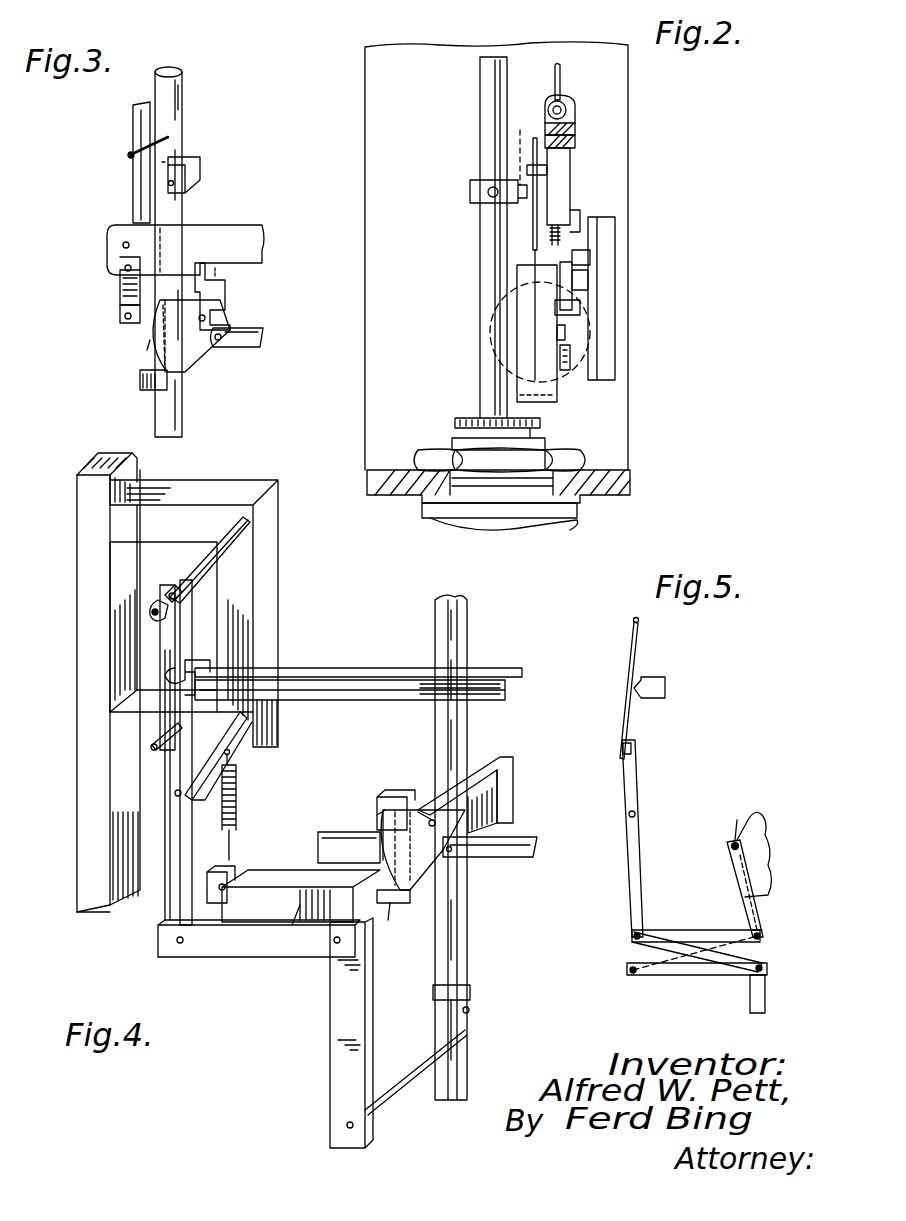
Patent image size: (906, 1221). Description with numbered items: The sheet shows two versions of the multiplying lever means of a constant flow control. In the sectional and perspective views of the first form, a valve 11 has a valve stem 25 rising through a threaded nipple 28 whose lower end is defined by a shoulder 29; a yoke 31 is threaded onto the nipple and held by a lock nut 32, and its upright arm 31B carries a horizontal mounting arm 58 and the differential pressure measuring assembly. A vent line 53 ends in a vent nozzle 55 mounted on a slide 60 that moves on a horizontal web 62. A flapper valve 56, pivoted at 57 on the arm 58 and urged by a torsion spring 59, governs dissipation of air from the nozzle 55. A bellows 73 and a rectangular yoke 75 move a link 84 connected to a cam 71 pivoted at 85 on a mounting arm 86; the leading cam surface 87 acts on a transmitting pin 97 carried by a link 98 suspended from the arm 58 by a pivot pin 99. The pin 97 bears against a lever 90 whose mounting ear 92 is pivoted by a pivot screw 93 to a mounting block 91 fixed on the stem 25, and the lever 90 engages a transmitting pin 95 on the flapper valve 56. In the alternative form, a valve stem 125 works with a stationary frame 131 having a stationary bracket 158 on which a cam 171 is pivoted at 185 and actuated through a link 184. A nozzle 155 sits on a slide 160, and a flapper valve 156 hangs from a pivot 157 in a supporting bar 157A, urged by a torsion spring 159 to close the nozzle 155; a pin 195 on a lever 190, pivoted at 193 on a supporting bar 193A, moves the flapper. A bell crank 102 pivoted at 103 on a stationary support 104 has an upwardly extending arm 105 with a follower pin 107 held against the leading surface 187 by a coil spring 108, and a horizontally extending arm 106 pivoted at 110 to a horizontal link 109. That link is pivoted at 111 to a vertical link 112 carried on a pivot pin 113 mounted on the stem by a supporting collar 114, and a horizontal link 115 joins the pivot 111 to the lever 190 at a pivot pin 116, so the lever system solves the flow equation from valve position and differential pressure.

In FIG. 2, the valve 11 is at (577, 515).
In FIG. 3, the valve stem 25 is at (182, 80).
In FIG. 2, the valve stem 25 is at (480, 100).
In FIG. 2, the threaded nipple 28 is at (455, 440).
In FIG. 2, the shoulder 29 is at (560, 455).
In FIG. 2, the yoke 31 is at (630, 480).
In FIG. 2, the upright arm of yoke 31B is at (365, 160).
In FIG. 2, the lock nut 32 is at (430, 458).
In FIG. 2, the vent line 53 is at (562, 73).
In FIG. 2, the vent nozzle 55 is at (575, 100).
In FIG. 3, the flapper valve 56 is at (150, 128).
In FIG. 2, the flapper valve 56 is at (570, 180).
In FIG. 3, the pivot 57 is at (123, 246).
In FIG. 2, the pivot 57 is at (578, 220).
In FIG. 3, the horizontal mounting arm 58 is at (230, 240).
In FIG. 2, the horizontal mounting arm 58 is at (615, 230).
In FIG. 2, the torsion spring 59 is at (560, 235).
In FIG. 2, the slide 60 is at (575, 128).
In FIG. 2, the horizontal web 62 is at (575, 143).
In FIG. 3, the cam 71 is at (205, 356).
In FIG. 2, the cam 71 is at (570, 355).
In FIG. 2, the bellows 73 is at (492, 355).
In FIG. 2, the rectangular yoke 75 is at (557, 400).
In FIG. 3, the link 84 is at (258, 330).
In FIG. 2, the link 84 is at (565, 332).
In FIG. 3, the pivot 85 is at (200, 320).
In FIG. 3, the mounting arm 86 is at (225, 292).
In FIG. 2, the mounting arm 86 is at (572, 270).
In FIG. 3, the leading cam surface 87 is at (150, 350).
In FIG. 3, the lever 90 is at (140, 385).
In FIG. 2, the lever 90 is at (533, 245).
In FIG. 3, the mounting block 91 is at (200, 163).
In FIG. 2, the mounting block 91 is at (470, 195).
In FIG. 3, the mounting ear 92 is at (185, 182).
In FIG. 2, the mounting ear 92 is at (535, 200).
In FIG. 3, the pivot screw 93 is at (168, 163).
In FIG. 2, the pivot screw 93 is at (527, 148).
In FIG. 3, the transmitting pin 95 is at (148, 146).
In FIG. 2, the transmitting pin 95 is at (547, 170).
In FIG. 3, the transmitting pin 97 is at (120, 316).
In FIG. 2, the transmitting pin 97 is at (580, 305).
In FIG. 3, the link 98 is at (120, 292).
In FIG. 2, the link 98 is at (588, 280).
In FIG. 3, the pivot pin 99 is at (125, 268).
In FIG. 2, the pivot pin 99 is at (590, 258).
In FIG. 4, the bell crank 102 is at (388, 920).
In FIG. 5, the bell crank 102 is at (762, 942).
In FIG. 4, the pivot 103 is at (400, 903).
In FIG. 5, the pivot 103 is at (760, 934).
In FIG. 4, the stationary support 104 is at (335, 832).
In FIG. 4, the upwardly extending arm 105 is at (395, 797).
In FIG. 4, the horizontally extending arm 106 is at (275, 870).
In FIG. 5, the horizontally extending arm 106 is at (718, 924).
In FIG. 4, the follower pin 107 is at (377, 818).
In FIG. 5, the follower pin 107 is at (727, 850).
In FIG. 4, the coil spring 108 is at (237, 800).
In FIG. 4, the horizontal link 109 is at (292, 910).
In FIG. 5, the horizontal link 109 is at (700, 975).
In FIG. 4, the pivot 110 is at (219, 888).
In FIG. 5, the pivot 110 is at (633, 973).
In FIG. 4, the pivot 111 is at (335, 943).
In FIG. 5, the pivot 111 is at (762, 968).
In FIG. 4, the vertical link 112 is at (330, 1020).
In FIG. 5, the vertical link 112 is at (765, 993).
In FIG. 4, the pivot pin 113 is at (420, 1072).
In FIG. 4, the supporting collar 114 is at (470, 1005).
In FIG. 4, the horizontal link 115 is at (230, 945).
In FIG. 5, the horizontal link 115 is at (665, 930).
In FIG. 4, the pivot pin 116 is at (178, 943).
In FIG. 5, the pivot pin 116 is at (633, 935).
In FIG. 4, the valve stem 125 is at (467, 930).
In FIG. 4, the stationary frame 131 is at (77, 710).
In FIG. 4, the nozzle 155 is at (165, 677).
In FIG. 5, the nozzle 155 is at (660, 677).
In FIG. 4, the flapper valve 156 is at (175, 640).
In FIG. 5, the flapper valve 156 is at (624, 706).
In FIG. 4, the pivot 157 is at (150, 612).
In FIG. 4, the supporting bar 157A is at (200, 560).
In FIG. 4, the stationary bracket 158 is at (480, 770).
In FIG. 4, the torsion spring 159 is at (168, 590).
In FIG. 4, the slide 160 is at (340, 690).
In FIG. 4, the cam 171 is at (435, 870).
In FIG. 5, the cam 171 is at (755, 830).
In FIG. 4, the link 184 is at (525, 838).
In FIG. 4, the pivot 185 is at (418, 812).
In FIG. 4, the leading surface 187 is at (383, 870).
In FIG. 5, the leading surface 187 is at (745, 812).
In FIG. 4, the lever 190 is at (178, 838).
In FIG. 5, the lever 190 is at (628, 864).
In FIG. 4, the pivot 193 is at (175, 793).
In FIG. 5, the pivot 193 is at (635, 812).
In FIG. 4, the supporting bar 193A is at (232, 748).
In FIG. 4, the pin 195 is at (152, 745).
In FIG. 5, the pin 195 is at (631, 749).